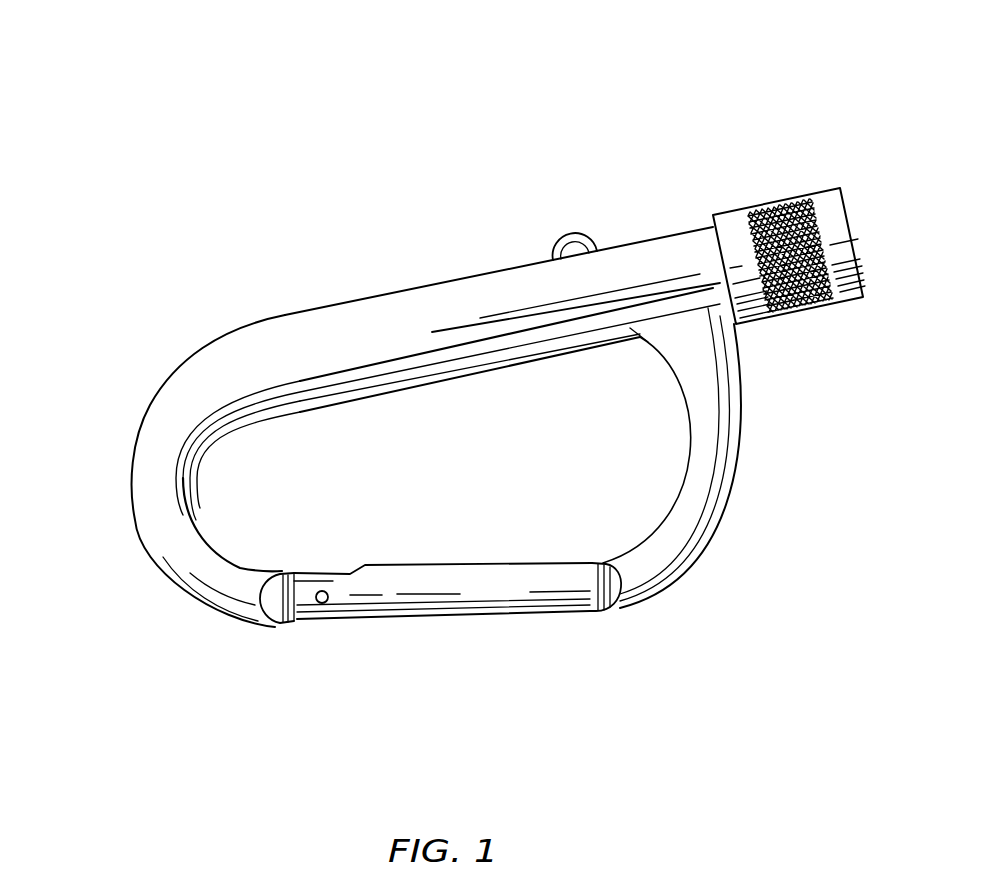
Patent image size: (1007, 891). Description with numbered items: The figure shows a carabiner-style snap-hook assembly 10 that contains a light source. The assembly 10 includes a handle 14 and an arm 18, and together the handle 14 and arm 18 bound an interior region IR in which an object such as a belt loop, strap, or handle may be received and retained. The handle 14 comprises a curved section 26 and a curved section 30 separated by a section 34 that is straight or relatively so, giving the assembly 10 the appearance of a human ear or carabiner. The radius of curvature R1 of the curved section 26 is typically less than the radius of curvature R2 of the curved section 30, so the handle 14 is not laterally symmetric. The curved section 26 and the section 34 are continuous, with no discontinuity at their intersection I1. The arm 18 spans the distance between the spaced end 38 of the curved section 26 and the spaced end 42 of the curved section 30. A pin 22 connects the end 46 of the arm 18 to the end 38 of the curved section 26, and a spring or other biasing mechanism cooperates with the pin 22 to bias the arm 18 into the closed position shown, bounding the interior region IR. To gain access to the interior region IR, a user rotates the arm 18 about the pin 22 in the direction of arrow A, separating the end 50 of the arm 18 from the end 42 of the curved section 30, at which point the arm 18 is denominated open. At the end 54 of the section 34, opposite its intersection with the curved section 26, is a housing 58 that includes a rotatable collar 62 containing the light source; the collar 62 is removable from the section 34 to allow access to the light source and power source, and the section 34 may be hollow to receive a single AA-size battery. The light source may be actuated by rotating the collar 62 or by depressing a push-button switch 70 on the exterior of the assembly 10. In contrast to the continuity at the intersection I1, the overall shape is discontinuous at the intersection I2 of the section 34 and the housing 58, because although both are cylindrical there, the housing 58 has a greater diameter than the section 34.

The snap-hook assembly 10 is at (774, 101).
The handle 14 is at (185, 350).
The intersection of sections 26 and 34 I1 is at (155, 386).
The curved section 26 is at (165, 523).
The curved section 30 is at (707, 494).
The section 34 is at (412, 302).
The end of section 34 54 is at (697, 222).
The housing 58 is at (807, 188).
The rotatable collar 62 is at (833, 298).
The push-button switch 70 is at (570, 232).
The arm 18 is at (513, 620).
The pin 22 is at (320, 602).
The end of curved section 26 38 is at (270, 613).
The end of curved section 30 42 is at (598, 612).
The end of arm 18 46 is at (345, 618).
The end of arm 18 50 is at (558, 562).
The arrow A is at (480, 578).
The radius of curvature of section 26 R1 is at (190, 495).
The radius of curvature of section 30 R2 is at (685, 463).
The intersection of section 34 and housing 58 I2 is at (633, 342).
The interior region IR is at (392, 467).